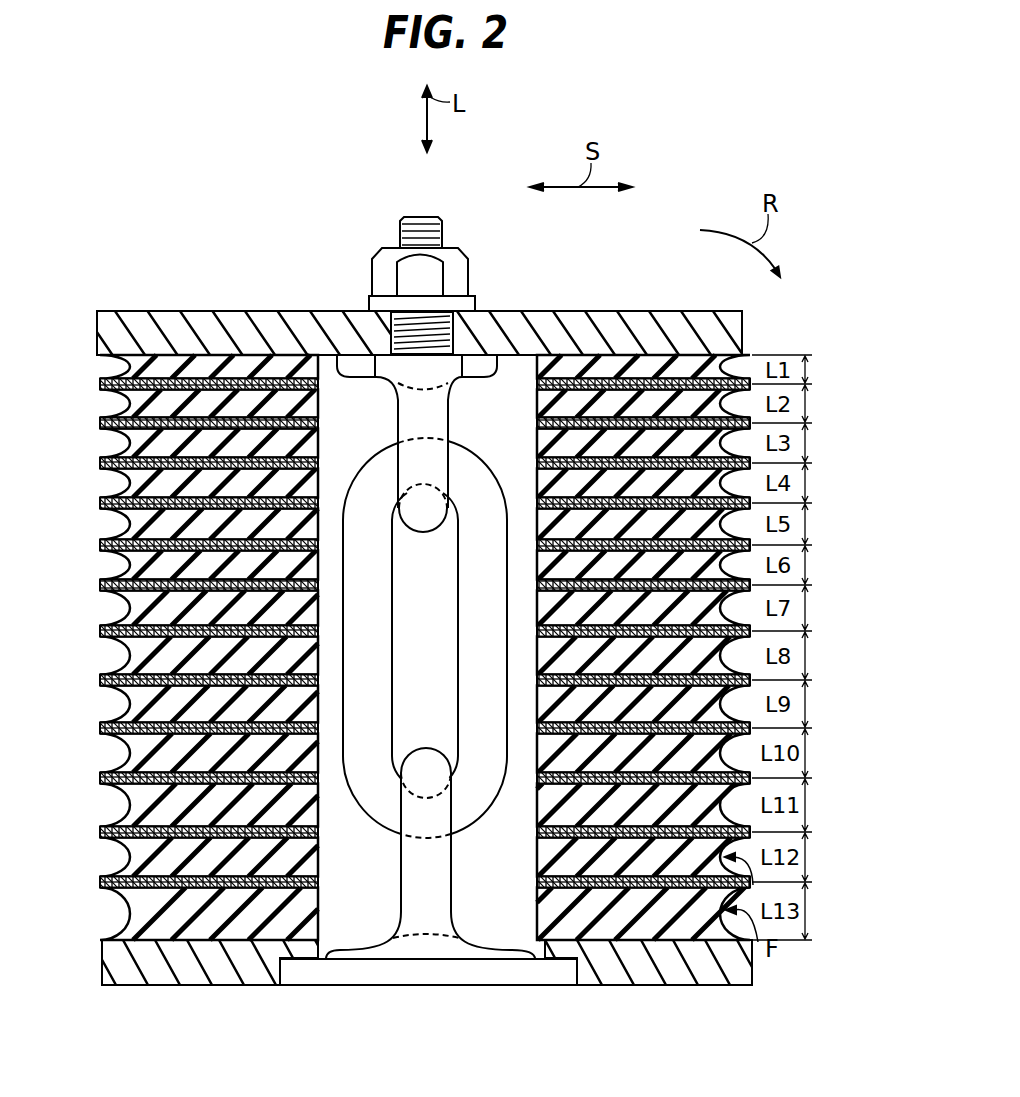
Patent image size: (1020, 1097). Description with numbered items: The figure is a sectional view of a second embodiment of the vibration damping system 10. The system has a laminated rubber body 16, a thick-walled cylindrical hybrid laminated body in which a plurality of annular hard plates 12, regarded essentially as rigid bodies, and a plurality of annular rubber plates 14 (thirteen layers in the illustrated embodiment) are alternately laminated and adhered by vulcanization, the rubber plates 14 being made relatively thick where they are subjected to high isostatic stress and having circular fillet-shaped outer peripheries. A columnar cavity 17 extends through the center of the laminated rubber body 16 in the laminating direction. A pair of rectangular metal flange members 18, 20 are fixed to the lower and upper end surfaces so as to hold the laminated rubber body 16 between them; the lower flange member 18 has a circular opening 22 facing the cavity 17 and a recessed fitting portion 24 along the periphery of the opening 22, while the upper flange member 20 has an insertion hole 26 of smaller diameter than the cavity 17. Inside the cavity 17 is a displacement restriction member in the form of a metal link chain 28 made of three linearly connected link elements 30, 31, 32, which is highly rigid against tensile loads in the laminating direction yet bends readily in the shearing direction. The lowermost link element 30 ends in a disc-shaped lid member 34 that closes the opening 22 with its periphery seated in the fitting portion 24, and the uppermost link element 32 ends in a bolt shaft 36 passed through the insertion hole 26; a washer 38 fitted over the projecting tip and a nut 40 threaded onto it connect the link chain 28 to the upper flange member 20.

The vibration damping system 10 is at (673, 216).
The hard plates 12 is at (183, 362).
The rubber plates 14 is at (231, 366).
The laminated rubber body 16 is at (268, 356).
The cavity 17 is at (318, 410).
The flange member 18 is at (652, 985).
The flange member 20 is at (638, 311).
The opening 22 is at (538, 940).
The fitting portion 24 is at (281, 972).
The insertion hole 26 is at (440, 317).
The link chain 28 is at (492, 447).
The link element 30 is at (400, 872).
The link element 31 is at (490, 838).
The link element 32 is at (423, 532).
The lid member 34 is at (408, 986).
The bolt shaft 36 is at (416, 218).
The washer 38 is at (478, 300).
The nut 40 is at (373, 248).